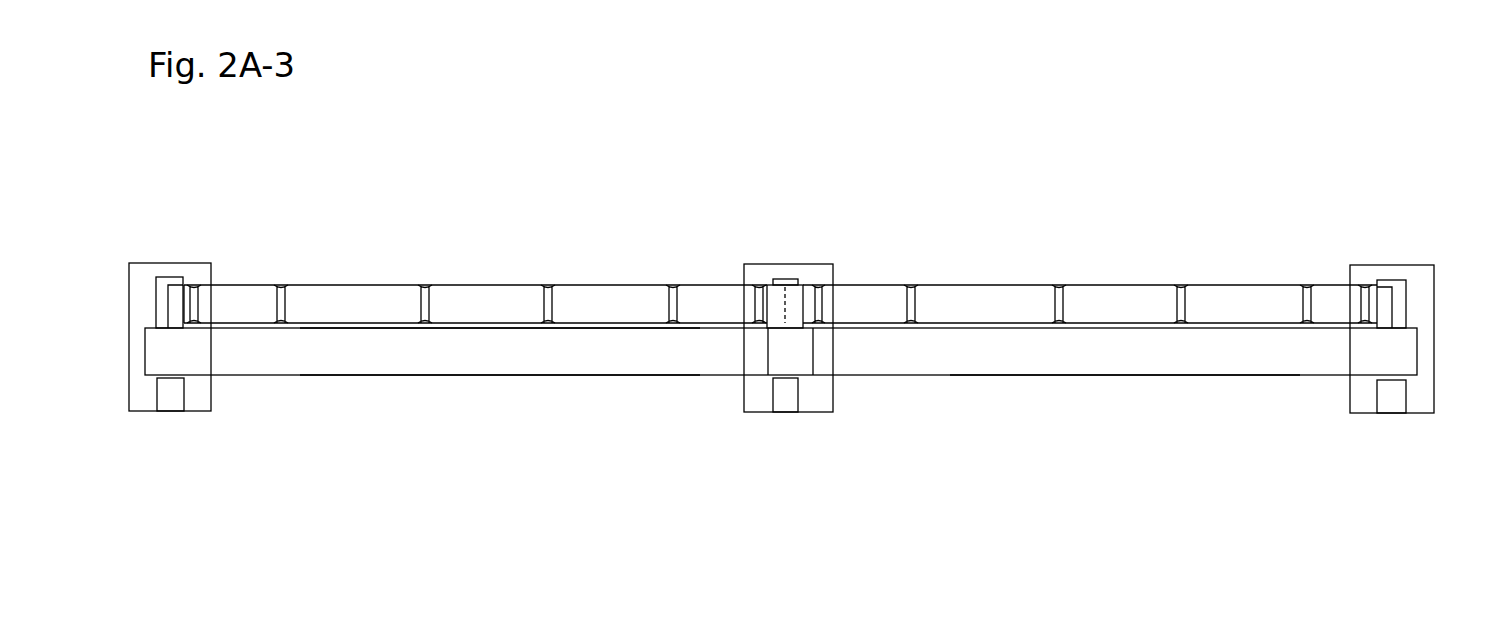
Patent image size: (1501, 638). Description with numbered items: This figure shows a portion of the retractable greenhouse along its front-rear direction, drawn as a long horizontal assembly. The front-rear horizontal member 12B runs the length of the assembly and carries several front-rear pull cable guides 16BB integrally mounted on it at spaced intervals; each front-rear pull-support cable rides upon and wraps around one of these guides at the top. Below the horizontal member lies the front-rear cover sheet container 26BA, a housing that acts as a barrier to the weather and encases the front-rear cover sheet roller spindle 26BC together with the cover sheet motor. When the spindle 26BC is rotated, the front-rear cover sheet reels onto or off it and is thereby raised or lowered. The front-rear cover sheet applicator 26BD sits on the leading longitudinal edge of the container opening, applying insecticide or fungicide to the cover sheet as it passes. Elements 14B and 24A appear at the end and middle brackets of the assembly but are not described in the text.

The front-rear horizontal member 12B is at (333, 284).
The end cap / retainer 14B is at (170, 278).
The front-rear pull cable guide 16BB is at (200, 277).
The bracket 24A is at (167, 411).
The front-rear cover sheet container 26BA is at (582, 375).
The front-rear cover sheet roller spindle 26BC is at (527, 362).
The front-rear cover sheet applicator 26BD is at (426, 375).